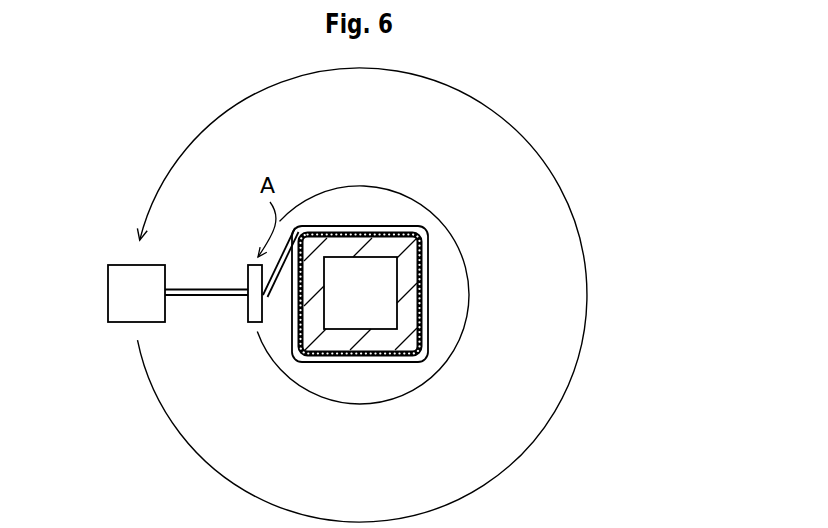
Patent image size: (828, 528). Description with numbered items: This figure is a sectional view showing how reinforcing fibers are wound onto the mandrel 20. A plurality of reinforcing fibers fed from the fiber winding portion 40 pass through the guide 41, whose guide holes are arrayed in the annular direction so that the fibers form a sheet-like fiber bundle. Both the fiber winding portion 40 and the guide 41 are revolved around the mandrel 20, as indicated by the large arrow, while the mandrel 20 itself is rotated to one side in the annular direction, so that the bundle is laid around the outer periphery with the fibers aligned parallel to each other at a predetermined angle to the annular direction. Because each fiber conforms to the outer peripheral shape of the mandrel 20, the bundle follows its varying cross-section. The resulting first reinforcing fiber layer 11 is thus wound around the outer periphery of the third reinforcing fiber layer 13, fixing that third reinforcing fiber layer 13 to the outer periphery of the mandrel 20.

The first reinforcing fiber layer 11 is at (400, 225).
The third reinforcing fiber layer 13 is at (368, 232).
The mandrel 20 is at (403, 315).
The fiber winding portion 40 is at (118, 292).
The guide 41 is at (255, 300).